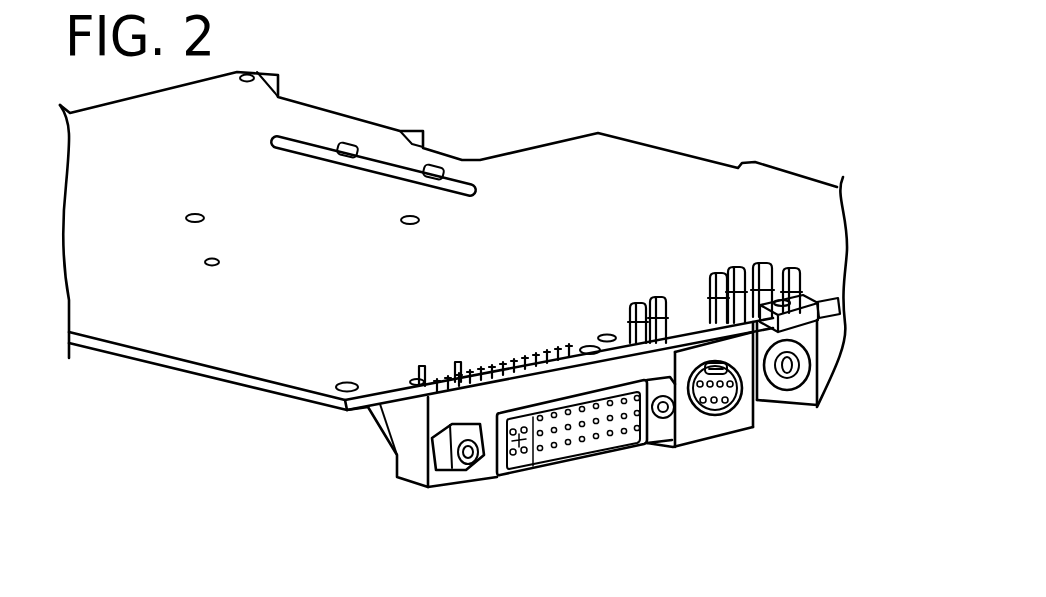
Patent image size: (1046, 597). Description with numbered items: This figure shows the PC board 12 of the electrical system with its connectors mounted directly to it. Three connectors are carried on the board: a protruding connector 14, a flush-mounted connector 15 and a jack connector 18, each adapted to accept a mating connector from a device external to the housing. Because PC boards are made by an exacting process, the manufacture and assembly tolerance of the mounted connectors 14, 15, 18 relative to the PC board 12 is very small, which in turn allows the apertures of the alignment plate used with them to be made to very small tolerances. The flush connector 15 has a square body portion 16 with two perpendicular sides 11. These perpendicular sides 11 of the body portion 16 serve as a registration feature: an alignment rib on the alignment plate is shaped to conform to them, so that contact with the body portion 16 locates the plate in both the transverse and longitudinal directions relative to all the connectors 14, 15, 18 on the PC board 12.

The perpendicular sides 11 is at (727, 430).
The PC board 12 is at (260, 392).
The protruding connector 14 is at (507, 477).
The flush-mounted connector 15 is at (724, 413).
The body portion 16 is at (757, 418).
The jack connector 18 is at (797, 370).